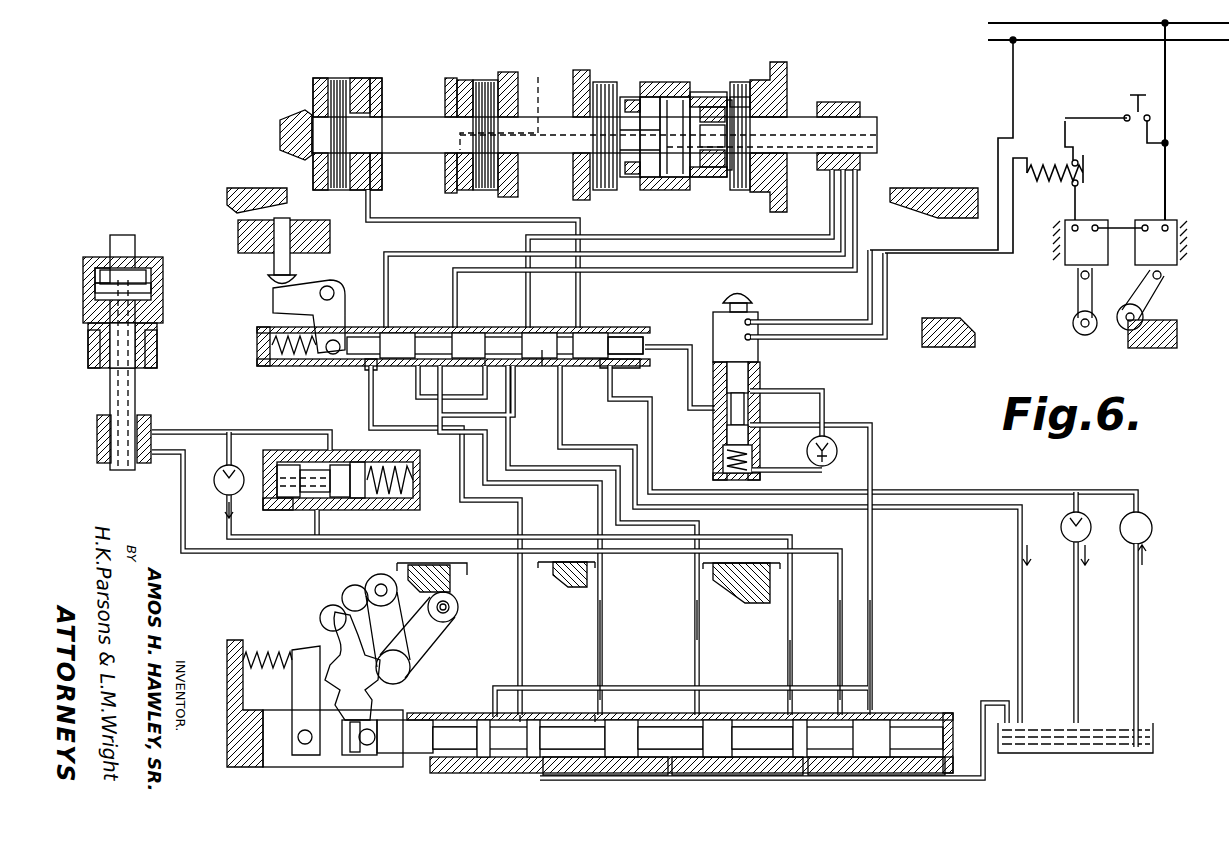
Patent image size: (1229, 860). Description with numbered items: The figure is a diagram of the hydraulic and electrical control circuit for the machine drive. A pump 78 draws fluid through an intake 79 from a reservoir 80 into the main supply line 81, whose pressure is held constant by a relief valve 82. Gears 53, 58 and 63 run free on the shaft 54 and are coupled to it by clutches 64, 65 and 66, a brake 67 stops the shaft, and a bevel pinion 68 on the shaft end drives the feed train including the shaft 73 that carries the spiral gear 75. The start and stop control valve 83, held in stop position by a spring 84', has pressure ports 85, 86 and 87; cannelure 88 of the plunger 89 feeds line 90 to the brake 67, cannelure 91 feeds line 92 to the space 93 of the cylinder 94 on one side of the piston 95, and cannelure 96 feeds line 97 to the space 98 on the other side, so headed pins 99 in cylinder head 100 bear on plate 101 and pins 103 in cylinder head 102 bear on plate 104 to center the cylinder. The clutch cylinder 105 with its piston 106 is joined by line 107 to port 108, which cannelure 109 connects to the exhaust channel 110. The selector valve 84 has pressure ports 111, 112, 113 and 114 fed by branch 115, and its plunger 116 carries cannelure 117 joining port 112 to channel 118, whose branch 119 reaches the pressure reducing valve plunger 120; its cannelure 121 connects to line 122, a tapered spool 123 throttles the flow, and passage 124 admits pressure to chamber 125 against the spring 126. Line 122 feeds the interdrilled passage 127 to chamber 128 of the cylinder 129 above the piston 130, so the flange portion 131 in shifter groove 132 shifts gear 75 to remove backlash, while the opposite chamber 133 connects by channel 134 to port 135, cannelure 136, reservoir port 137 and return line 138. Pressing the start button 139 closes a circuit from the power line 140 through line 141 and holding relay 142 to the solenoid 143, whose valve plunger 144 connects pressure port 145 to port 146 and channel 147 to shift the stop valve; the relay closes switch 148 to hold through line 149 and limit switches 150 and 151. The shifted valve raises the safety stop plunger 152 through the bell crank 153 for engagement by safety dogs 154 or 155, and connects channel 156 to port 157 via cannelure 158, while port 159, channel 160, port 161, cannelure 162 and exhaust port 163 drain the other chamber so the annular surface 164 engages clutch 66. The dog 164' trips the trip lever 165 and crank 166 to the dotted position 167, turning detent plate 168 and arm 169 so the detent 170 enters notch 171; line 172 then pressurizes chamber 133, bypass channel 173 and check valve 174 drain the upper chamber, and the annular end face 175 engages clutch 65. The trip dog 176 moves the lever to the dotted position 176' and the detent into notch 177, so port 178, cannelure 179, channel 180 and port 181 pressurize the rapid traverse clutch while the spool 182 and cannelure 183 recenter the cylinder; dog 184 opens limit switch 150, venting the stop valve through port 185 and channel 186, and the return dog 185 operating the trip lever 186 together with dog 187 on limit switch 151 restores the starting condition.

The gear 53 is at (505, 72).
The shaft 54 is at (399, 117).
The gear 58 is at (580, 70).
The gear 63 is at (778, 62).
The clutch 64 is at (482, 80).
The clutch 65 is at (608, 82).
The clutch 66 is at (740, 82).
The brake 67 is at (345, 78).
The bevel pinion 68 is at (292, 110).
The shaft 73 is at (132, 240).
The spiral gear 75 is at (157, 358).
The pump 78 is at (1152, 528).
The intake 79 is at (1138, 635).
The reservoir 80 is at (1151, 724).
The main supply line 81 is at (1053, 491).
The relief valve 82 is at (1083, 540).
The start and stop control valve 83 is at (613, 338).
The selector valve 84 is at (680, 718).
The spring 84' is at (294, 368).
The pressure port 85 is at (613, 362).
The pressure port 86 is at (485, 365).
The pressure port 87 is at (410, 363).
The cannelure 88 is at (590, 338).
The stop valve plunger 89 is at (640, 343).
The line 90 is at (575, 314).
The cannelure 91 is at (473, 343).
The line 92 is at (452, 293).
The space 93 is at (656, 97).
The cylinder 94 is at (675, 105).
The piston 95 is at (703, 100).
The cannelure 96 is at (400, 338).
The line 97 is at (383, 293).
The space 98 is at (680, 180).
The headed pins 99 is at (658, 185).
The cylinder head 100 is at (640, 180).
The plate 101 is at (618, 150).
The cylinder head 102 is at (703, 182).
The headed pins 103 is at (723, 92).
The plate 104 is at (722, 108).
The cylinder 105 is at (445, 178).
The piston 106 is at (447, 80).
The line 107 is at (828, 215).
The port 108 is at (522, 322).
The cannelure 109 is at (542, 350).
The exhaust channel 110 is at (557, 436).
The pressure port 111 is at (870, 718).
The pressure port 112 is at (731, 718).
The pressure port 113 is at (621, 716).
The pressure port 114 is at (490, 689).
The branch 115 is at (872, 628).
The valve plunger 116 is at (423, 725).
The cannelure 117 is at (758, 718).
The channel 118 is at (790, 658).
The branch 119 is at (320, 521).
The pressure reducing valve plunger 120 is at (356, 462).
The cannelure 121 is at (333, 462).
The line 122 is at (250, 428).
The tapered spool 123 is at (270, 510).
The passage 124 is at (348, 500).
The chamber 125 is at (278, 462).
The spring 126 is at (411, 490).
The interdrilled passage 127 is at (135, 398).
The chamber 128 is at (150, 262).
The cylinder 129 is at (160, 285).
The piston 130 is at (95, 285).
The flange portion 131 is at (158, 328).
The shifter groove 132 is at (90, 335).
The chamber 133 is at (100, 290).
The channel 134 is at (118, 386).
The port 135 is at (865, 698).
The cannelure 136 is at (843, 733).
The reservoir port 137 is at (813, 772).
The return line 138 is at (883, 777).
The start button 139 is at (1125, 115).
The power line 140 is at (1165, 118).
The line 141 is at (1065, 118).
The holding relay 142 is at (1043, 185).
The solenoid 143 is at (758, 320).
The valve plunger 144 is at (750, 375).
The pressure port 145 is at (750, 423).
The port 146 is at (728, 415).
The channel 147 is at (686, 345).
The switch 148 is at (1085, 170).
The line 149 is at (1080, 188).
The limit switch 150 is at (1068, 250).
The limit switch 151 is at (1175, 225).
The safety stop plunger 152 is at (275, 262).
The bell crank 153 is at (280, 303).
The safety dog 154 is at (240, 190).
The safety dog 155 is at (926, 190).
The channel 156 is at (370, 386).
The port 157 is at (523, 717).
The cannelure 158 is at (533, 760).
The port 159 is at (478, 390).
The channel 160 is at (603, 630).
The port 161 is at (593, 716).
The cannelure 162 is at (558, 728).
The exhaust port 163 is at (553, 760).
The annular surface 164 is at (748, 161).
The dog 164' is at (566, 592).
The trip lever 165 is at (372, 578).
The crank 166 is at (452, 625).
The dotted line position 167 is at (343, 583).
The detent plate 168 is at (380, 683).
The arm 169 is at (358, 712).
The spring pressed detent 170 is at (298, 650).
The notch 171 is at (338, 646).
The line 172 is at (805, 551).
The bypass channel 173 is at (229, 461).
The check valve 174 is at (214, 478).
The annular end face 175 is at (628, 185).
The trip dog 176 is at (741, 600).
The dotted line position 176' is at (296, 611).
The detent notch 177 is at (352, 666).
The port 178 is at (690, 716).
The cannelure 179 is at (678, 745).
The channel 180 is at (693, 583).
The port 181 is at (512, 390).
The spool 182 is at (484, 750).
The cannelure 183 is at (448, 747).
The dog 184 is at (943, 348).
The port 185 is at (750, 388).
The channel 186 is at (825, 407).
The dog 187 is at (1163, 320).